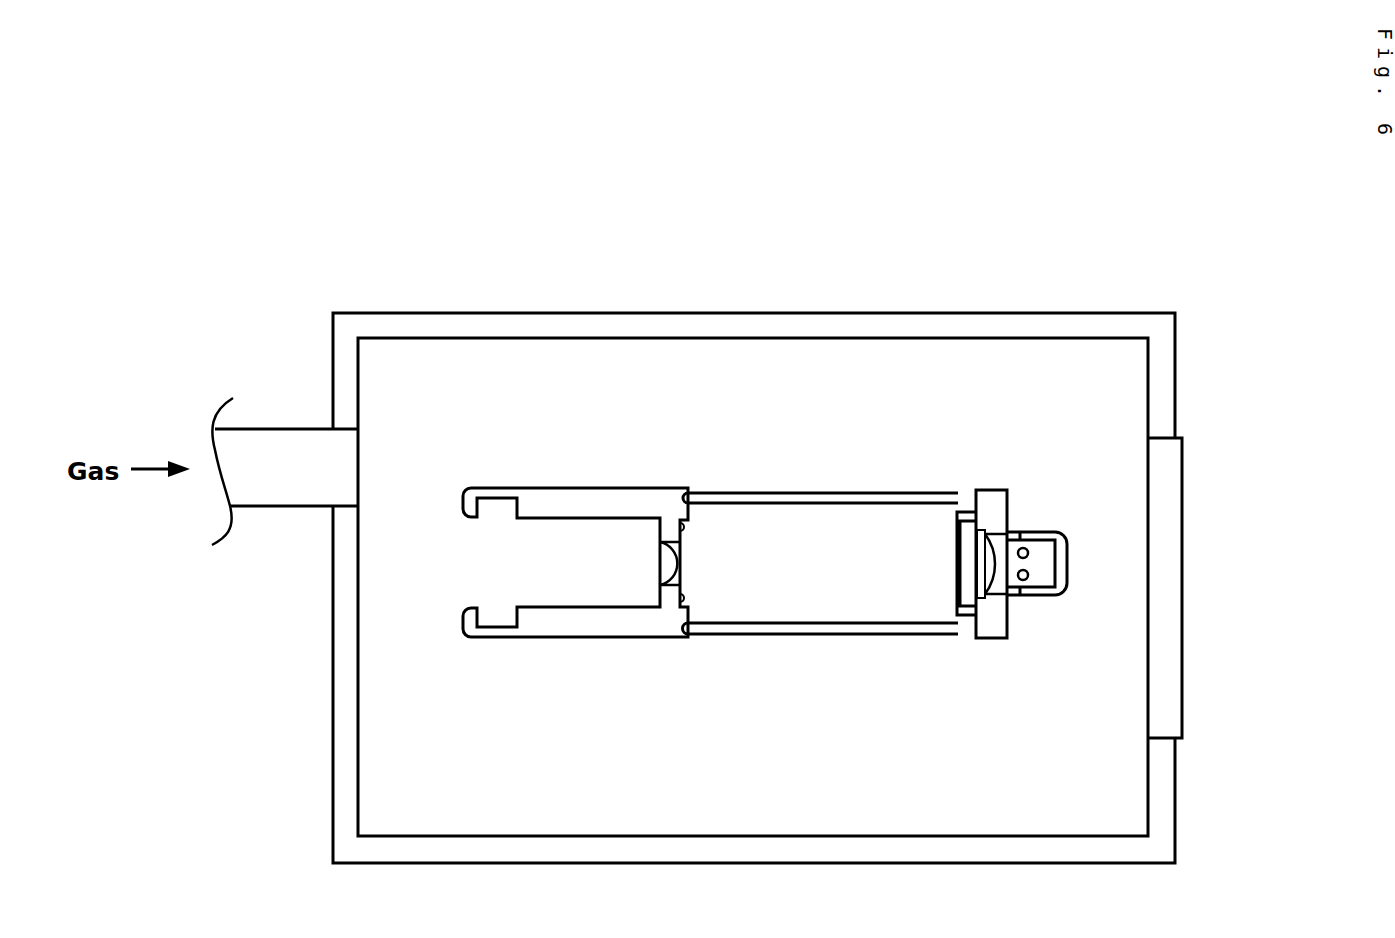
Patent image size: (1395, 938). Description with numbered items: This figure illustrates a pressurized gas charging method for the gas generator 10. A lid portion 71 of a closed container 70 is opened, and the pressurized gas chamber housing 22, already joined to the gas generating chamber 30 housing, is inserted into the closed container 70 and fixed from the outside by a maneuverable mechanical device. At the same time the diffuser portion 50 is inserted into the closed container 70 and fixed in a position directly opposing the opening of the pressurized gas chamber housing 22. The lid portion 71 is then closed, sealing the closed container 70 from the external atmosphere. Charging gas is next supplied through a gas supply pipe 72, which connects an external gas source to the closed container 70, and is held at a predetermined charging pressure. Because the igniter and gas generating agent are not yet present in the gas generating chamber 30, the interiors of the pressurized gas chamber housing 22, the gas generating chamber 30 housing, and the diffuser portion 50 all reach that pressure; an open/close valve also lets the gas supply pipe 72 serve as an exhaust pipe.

The gas generator 10 is at (762, 487).
The pressurized gas chamber housing 22 is at (815, 632).
The gas generating chamber 30 is at (575, 487).
The diffuser portion 50 is at (1025, 510).
The closed container 70 is at (950, 308).
The lid portion 71 is at (1172, 477).
The gas supply pipe 72 is at (268, 445).